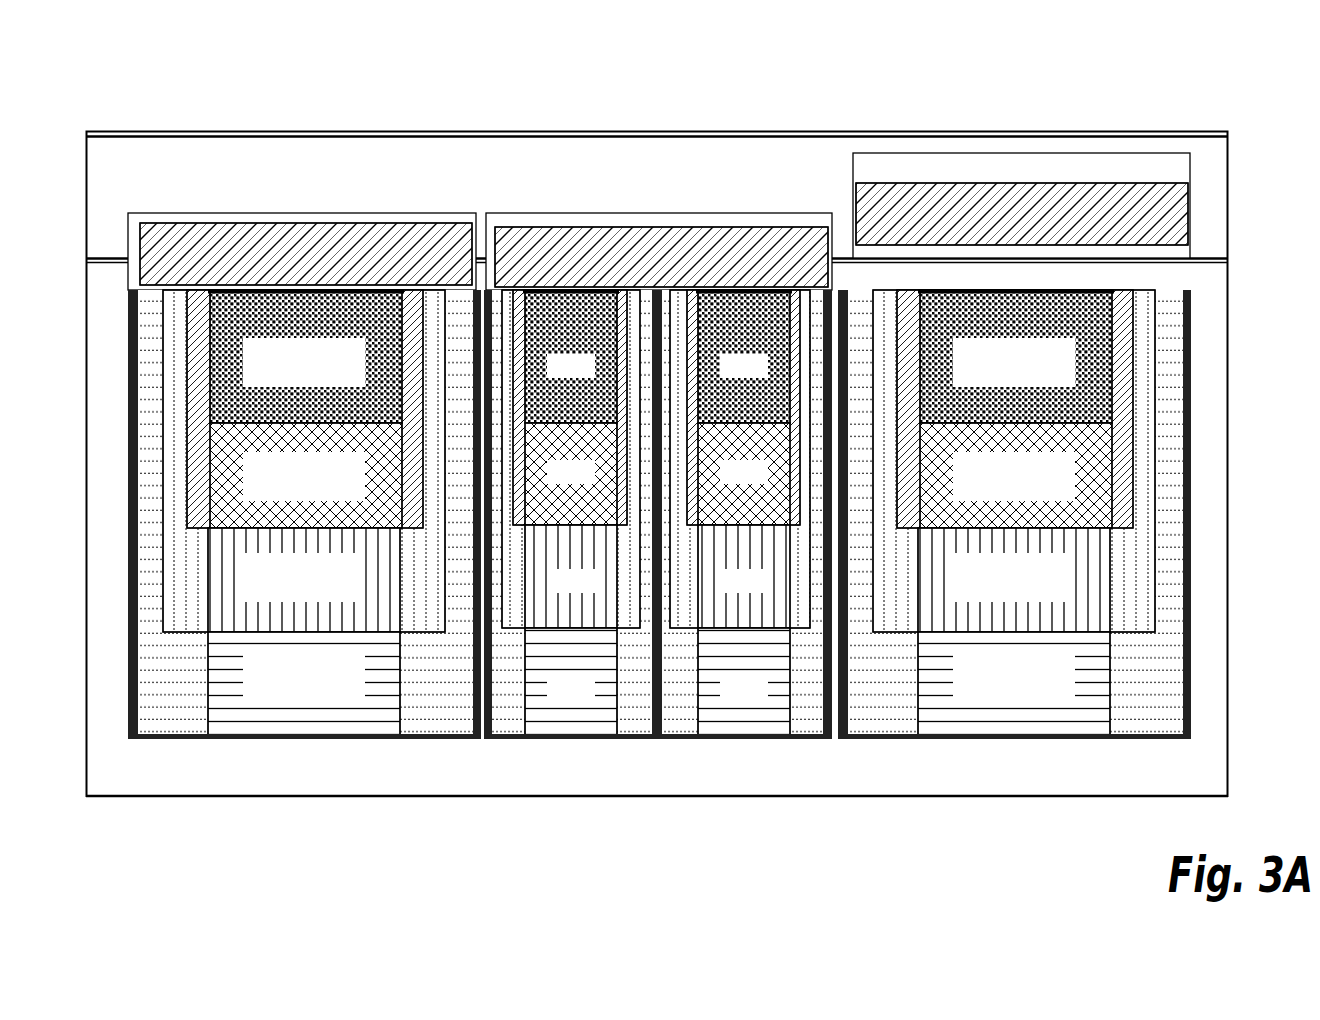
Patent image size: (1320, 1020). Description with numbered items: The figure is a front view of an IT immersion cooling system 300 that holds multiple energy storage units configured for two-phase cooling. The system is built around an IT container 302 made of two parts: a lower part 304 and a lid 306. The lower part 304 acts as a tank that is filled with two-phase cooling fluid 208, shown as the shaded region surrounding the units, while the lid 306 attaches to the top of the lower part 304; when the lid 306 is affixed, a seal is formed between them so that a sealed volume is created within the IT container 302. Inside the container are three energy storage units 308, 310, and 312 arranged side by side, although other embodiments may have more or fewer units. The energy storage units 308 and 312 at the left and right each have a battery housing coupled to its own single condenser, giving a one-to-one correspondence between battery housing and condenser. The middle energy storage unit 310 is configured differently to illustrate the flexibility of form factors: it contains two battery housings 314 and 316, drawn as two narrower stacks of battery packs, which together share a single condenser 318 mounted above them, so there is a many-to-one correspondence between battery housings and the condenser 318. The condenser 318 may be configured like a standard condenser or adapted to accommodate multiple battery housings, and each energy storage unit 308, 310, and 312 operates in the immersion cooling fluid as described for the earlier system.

The IT immersion cooling system 300 is at (663, 426).
The IT container 302 is at (1243, 133).
The lower part 304 is at (607, 549).
The lid 306 is at (606, 211).
The energy storage unit 308 is at (138, 742).
The energy storage unit 310 is at (658, 561).
The energy storage unit 312 is at (848, 742).
The battery housing 314 is at (583, 746).
The battery housing 316 is at (744, 561).
The condenser 318 is at (626, 208).
The two-phase cooling fluid 208 is at (122, 728).